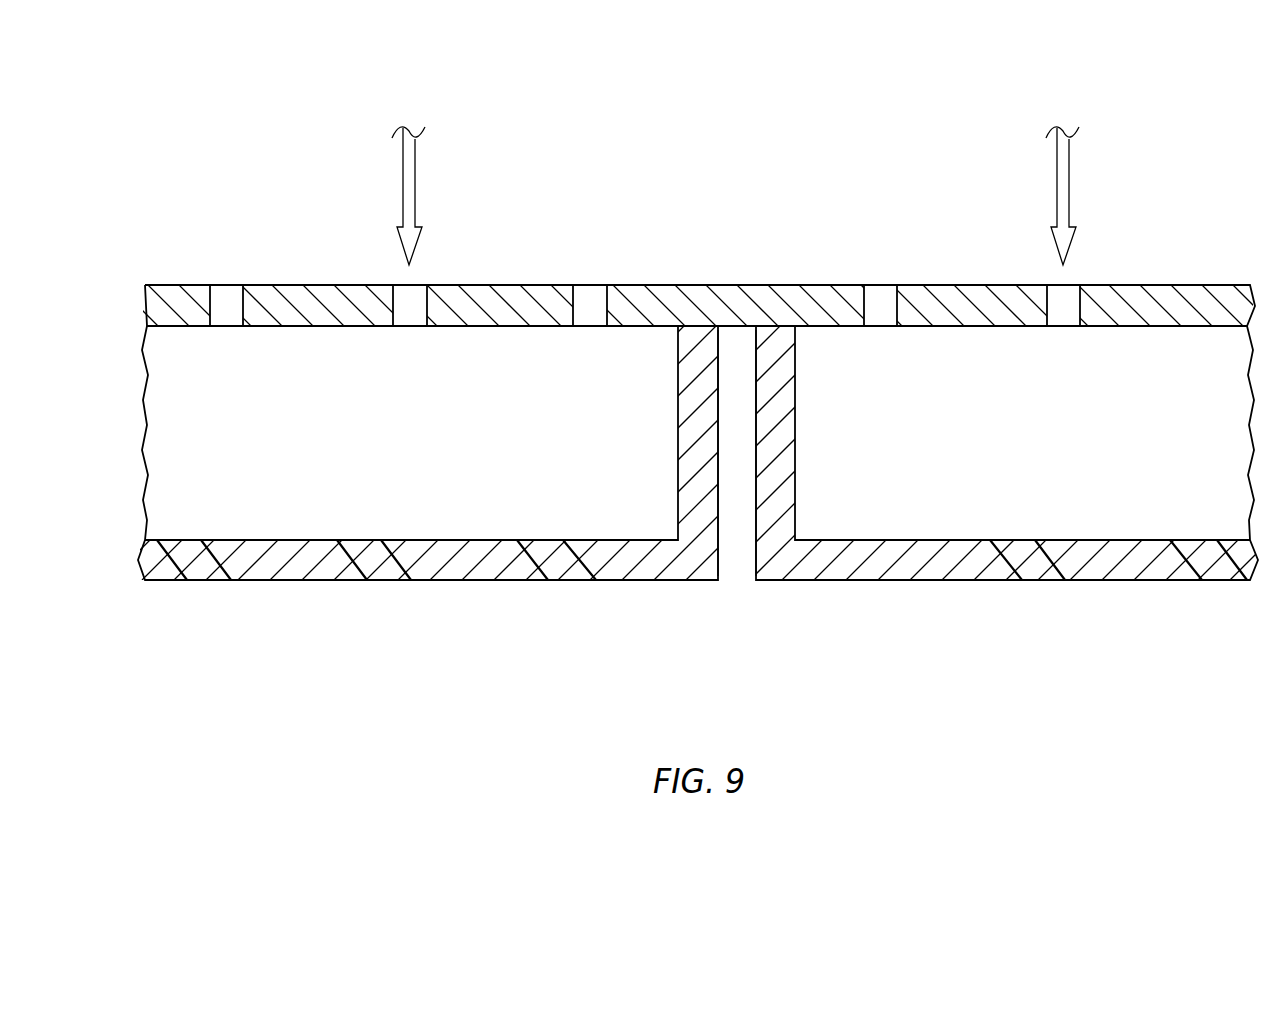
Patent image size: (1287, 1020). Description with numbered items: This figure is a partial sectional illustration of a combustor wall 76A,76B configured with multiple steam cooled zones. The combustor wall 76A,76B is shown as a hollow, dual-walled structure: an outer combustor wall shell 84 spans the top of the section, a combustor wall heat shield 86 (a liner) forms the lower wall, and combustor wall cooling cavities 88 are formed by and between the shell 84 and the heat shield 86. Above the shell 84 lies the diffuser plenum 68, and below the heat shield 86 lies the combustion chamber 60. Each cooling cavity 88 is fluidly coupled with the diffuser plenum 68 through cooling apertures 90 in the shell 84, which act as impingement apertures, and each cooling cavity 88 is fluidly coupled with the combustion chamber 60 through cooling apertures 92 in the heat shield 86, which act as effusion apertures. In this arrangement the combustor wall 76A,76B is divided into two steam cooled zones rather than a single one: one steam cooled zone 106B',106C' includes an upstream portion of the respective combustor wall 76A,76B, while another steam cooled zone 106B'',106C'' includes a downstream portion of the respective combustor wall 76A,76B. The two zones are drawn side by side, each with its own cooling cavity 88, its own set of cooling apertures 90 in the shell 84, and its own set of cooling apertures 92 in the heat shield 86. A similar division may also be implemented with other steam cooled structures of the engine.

The combustion chamber 60 is at (712, 704).
The diffuser plenum 68 is at (729, 182).
The combustor walls 76A,76B is at (1167, 148).
The combustor wall shell 84 is at (816, 270).
The combustor wall heat shield 86 is at (797, 590).
The combustor wall cooling cavities 88 is at (377, 453).
The cooling apertures in the shell 90 is at (228, 320).
The cooling apertures in the heat shield 92 is at (187, 550).
The steam cooled zone 106B',106C' is at (643, 522).
The steam cooled zone 106B'',106C'' is at (643, 517).